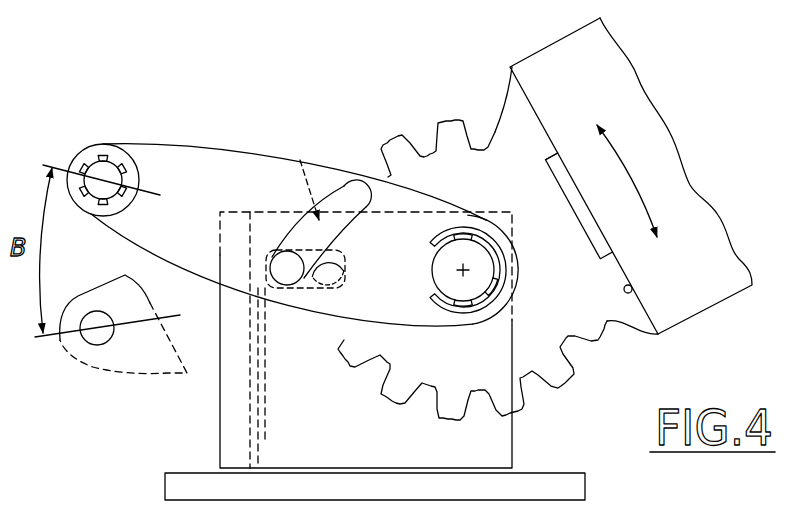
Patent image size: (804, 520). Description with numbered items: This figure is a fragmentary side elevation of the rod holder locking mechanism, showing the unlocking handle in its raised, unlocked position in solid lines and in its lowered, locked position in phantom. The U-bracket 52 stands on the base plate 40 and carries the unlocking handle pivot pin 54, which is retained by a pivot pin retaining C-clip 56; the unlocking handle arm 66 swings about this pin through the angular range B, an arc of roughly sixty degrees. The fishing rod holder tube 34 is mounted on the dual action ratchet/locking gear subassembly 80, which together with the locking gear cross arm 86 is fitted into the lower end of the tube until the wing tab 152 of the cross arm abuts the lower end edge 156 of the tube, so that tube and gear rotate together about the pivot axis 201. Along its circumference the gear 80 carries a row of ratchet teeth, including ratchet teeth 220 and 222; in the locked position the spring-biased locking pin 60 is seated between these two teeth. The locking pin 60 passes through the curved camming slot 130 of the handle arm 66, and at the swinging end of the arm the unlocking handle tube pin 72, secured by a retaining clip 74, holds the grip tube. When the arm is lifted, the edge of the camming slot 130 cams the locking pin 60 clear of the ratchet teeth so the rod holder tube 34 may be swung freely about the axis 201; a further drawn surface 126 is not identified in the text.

The fishing rod holder tube 34 is at (703, 192).
The base plate 40 is at (163, 477).
The U-bracket 52 is at (217, 413).
The unlocking handle pivot pin 54 is at (440, 253).
The pivot pin retaining C-clip 56 is at (475, 213).
The locking pin 60 is at (308, 292).
The unlocking handle arm 66 is at (230, 143).
The unlocking handle tube pin 72 is at (103, 167).
The unlocking handle tube pin retaining clip 74 is at (122, 141).
The dual action ratchet/locking gear subassembly 80 is at (459, 115).
The locking gear cross arm 86 is at (581, 234).
The cam surface 126 is at (318, 252).
The curved camming slot 130 is at (331, 191).
The wing tab 152 is at (546, 162).
The lower end edge of tube 156 is at (632, 289).
The pivot axis 201 is at (456, 272).
The ratchet tooth 220 is at (322, 296).
The ratchet tooth 222 is at (300, 160).